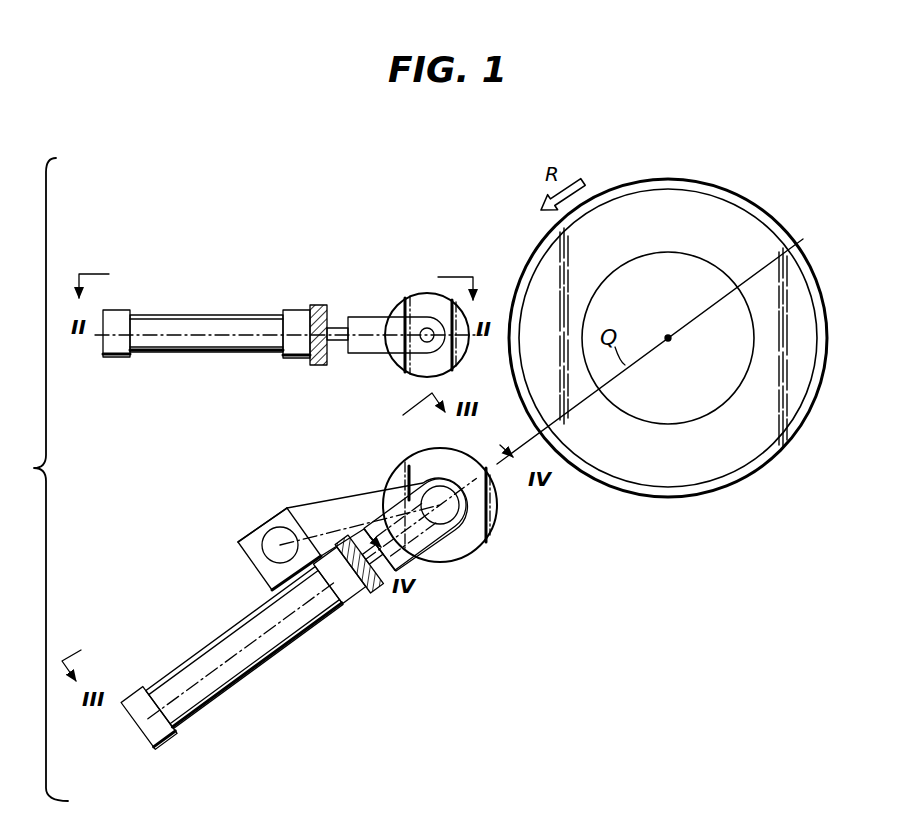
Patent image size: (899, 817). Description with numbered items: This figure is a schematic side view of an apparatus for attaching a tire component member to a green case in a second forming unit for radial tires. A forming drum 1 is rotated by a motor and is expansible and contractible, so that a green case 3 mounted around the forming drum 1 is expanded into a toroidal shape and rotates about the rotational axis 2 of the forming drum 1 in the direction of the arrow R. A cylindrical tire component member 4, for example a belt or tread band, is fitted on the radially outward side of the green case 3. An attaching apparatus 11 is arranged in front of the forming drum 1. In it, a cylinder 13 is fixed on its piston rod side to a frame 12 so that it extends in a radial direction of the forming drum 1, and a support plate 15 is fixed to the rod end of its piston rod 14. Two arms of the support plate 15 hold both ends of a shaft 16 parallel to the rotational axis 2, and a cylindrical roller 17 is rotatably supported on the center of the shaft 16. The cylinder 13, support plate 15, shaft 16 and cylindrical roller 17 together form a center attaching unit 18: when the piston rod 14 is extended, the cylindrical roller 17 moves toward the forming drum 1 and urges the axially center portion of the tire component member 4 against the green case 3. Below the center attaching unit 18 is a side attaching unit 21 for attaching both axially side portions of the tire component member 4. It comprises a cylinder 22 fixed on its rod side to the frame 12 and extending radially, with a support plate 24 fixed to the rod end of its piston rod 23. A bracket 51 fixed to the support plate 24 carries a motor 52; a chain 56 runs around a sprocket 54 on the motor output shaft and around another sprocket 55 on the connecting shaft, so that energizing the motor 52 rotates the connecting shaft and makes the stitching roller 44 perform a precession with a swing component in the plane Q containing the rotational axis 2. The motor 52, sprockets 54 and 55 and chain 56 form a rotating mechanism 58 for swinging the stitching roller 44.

The forming drum 1 is at (713, 397).
The rotational axis 2 is at (671, 343).
The green case 3 is at (766, 237).
The tire component member 4 is at (653, 180).
The attaching apparatus 11 is at (32, 478).
The frame 12 is at (317, 305).
The cylinder 13 is at (200, 325).
The piston rod 14 is at (335, 346).
The support plate 15 is at (378, 318).
The shaft 16 is at (433, 341).
The cylindrical roller 17 is at (403, 366).
The center attaching unit 18 is at (264, 304).
The side attaching unit 21 is at (198, 644).
The cylinder 22 is at (257, 673).
The piston rod 23 is at (373, 573).
The support plate 24 is at (430, 540).
The stitching roller 44 is at (493, 508).
The bracket 51 is at (277, 587).
The motor 52 is at (283, 508).
The sprocket 54 is at (272, 545).
The sprocket 55 is at (482, 537).
The chain 56 is at (333, 512).
The rotating mechanism 58 is at (250, 513).